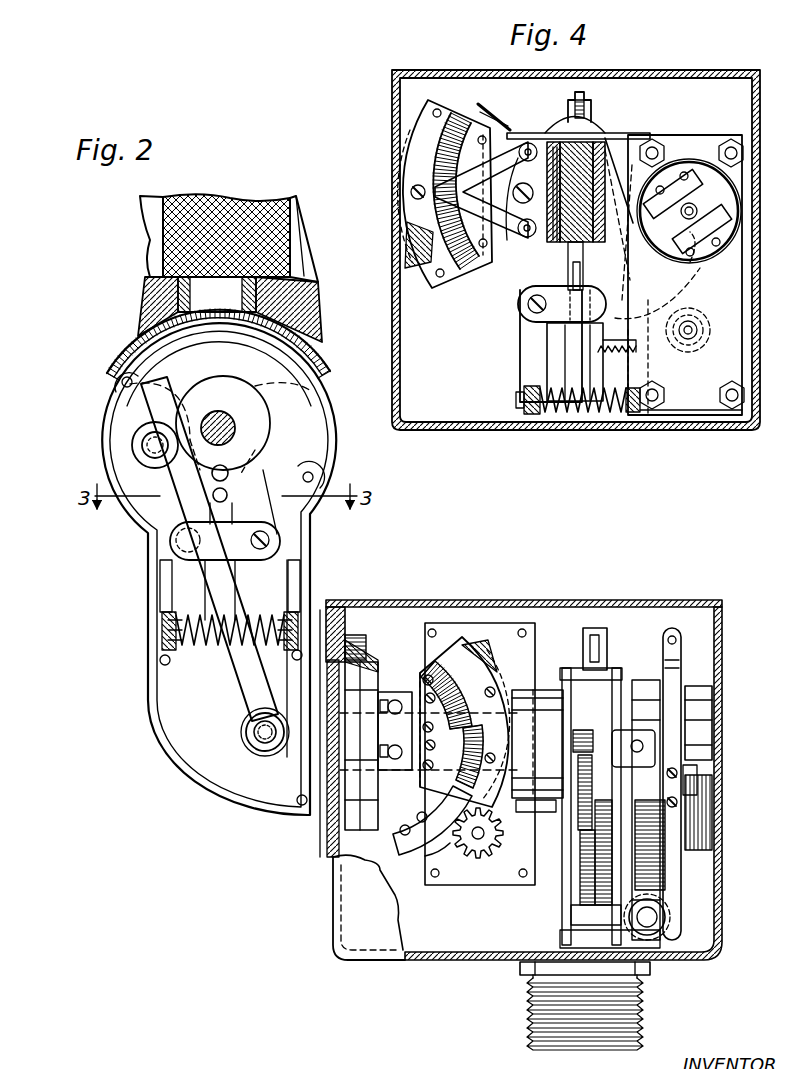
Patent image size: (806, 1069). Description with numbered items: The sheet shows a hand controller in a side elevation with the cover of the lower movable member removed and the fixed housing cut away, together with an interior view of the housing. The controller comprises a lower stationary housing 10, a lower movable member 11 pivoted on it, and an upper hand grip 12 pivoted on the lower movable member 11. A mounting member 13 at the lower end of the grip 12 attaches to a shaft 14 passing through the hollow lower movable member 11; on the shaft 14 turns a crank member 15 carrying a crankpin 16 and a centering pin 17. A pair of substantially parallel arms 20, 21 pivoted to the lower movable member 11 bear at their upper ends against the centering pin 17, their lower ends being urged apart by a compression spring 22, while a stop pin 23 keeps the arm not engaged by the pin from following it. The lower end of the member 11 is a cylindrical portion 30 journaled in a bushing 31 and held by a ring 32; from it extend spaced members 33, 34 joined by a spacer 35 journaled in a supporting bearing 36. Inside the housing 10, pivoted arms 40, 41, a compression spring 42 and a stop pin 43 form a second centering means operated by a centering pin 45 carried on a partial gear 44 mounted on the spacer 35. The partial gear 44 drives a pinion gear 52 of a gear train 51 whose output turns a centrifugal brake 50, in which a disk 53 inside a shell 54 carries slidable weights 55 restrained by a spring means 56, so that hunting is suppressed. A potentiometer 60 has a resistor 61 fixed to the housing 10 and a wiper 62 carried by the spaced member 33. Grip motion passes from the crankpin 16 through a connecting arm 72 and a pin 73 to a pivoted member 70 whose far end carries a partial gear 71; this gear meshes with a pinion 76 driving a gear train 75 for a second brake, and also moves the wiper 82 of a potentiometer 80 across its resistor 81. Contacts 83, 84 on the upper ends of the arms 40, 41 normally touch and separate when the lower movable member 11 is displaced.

In FIG. 4, the lower stationary housing 10 is at (752, 307).
In FIG. 2, the lower movable member 11 is at (304, 542).
In FIG. 2, the hand grip 12 is at (302, 250).
In FIG. 2, the mounting member 13 is at (324, 364).
In FIG. 2, the shaft 14 is at (222, 411).
In FIG. 2, the crank member 15 is at (270, 432).
In FIG. 2, the crankpin 16 is at (153, 432).
In FIG. 2, the centering pin 17 is at (229, 473).
In FIG. 2, the arm 20 is at (172, 588).
In FIG. 2, the arm 21 is at (280, 588).
In FIG. 2, the compression spring 22 is at (206, 652).
In FIG. 2, the stop pin 23 is at (228, 496).
In FIG. 4, the cylindrical portion 30 is at (372, 672).
In FIG. 4, the bushing 31 is at (340, 640).
In FIG. 4, the ring 32 is at (364, 650).
In FIG. 4, the spaced member 33 is at (556, 133).
In FIG. 4, the spaced member 34 is at (592, 140).
In FIG. 4, the spacer 35 is at (575, 143).
In FIG. 4, the supporting bearing 36 is at (700, 686).
In FIG. 4, the pivoted arm 40 is at (524, 350).
In FIG. 4, the pivoted arm 41 is at (624, 364).
In FIG. 4, the compression spring 42 is at (598, 412).
In FIG. 4, the stop pin 43 is at (564, 273).
In FIG. 4, the partial gear 44 is at (606, 340).
In FIG. 4, the centering pin 45 is at (571, 252).
In FIG. 4, the brake 50 is at (664, 262).
In FIG. 4, the gear train 51 is at (710, 400).
In FIG. 4, the pinion gear 52 is at (693, 353).
In FIG. 4, the disk 53 is at (737, 197).
In FIG. 4, the shell 54 is at (710, 166).
In FIG. 4, the slidable weights 55 is at (668, 178).
In FIG. 4, the spring means 56 is at (716, 205).
In FIG. 4, the potentiometer 60 is at (478, 282).
In FIG. 4, the resistor 61 is at (462, 122).
In FIG. 4, the wiper 62 is at (512, 242).
In FIG. 2, the pivoted member 70 is at (290, 745).
In FIG. 4, the partial gear 71 is at (433, 850).
In FIG. 2, the connecting arm 72 is at (247, 697).
In FIG. 2, the pin 73 is at (256, 735).
In FIG. 4, the gear train 75 is at (500, 890).
In FIG. 4, the pinion 76 is at (500, 832).
In FIG. 4, the potentiometer 80 is at (446, 640).
In FIG. 4, the resistor 81 is at (472, 640).
In FIG. 4, the wiper 82 is at (430, 790).
In FIG. 4, the contact 83 is at (512, 110).
In FIG. 4, the contact 84 is at (586, 100).